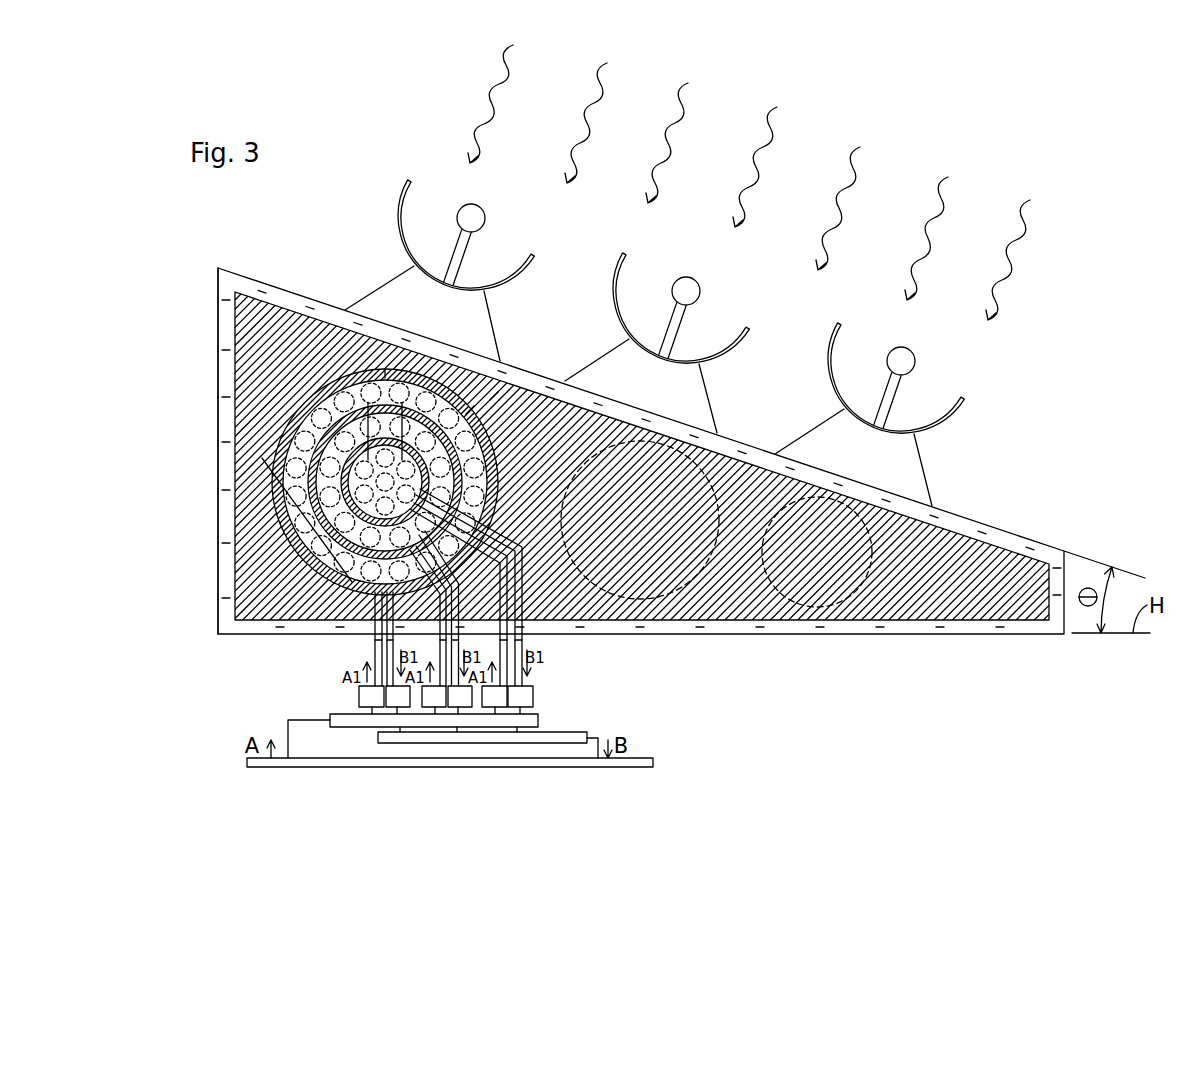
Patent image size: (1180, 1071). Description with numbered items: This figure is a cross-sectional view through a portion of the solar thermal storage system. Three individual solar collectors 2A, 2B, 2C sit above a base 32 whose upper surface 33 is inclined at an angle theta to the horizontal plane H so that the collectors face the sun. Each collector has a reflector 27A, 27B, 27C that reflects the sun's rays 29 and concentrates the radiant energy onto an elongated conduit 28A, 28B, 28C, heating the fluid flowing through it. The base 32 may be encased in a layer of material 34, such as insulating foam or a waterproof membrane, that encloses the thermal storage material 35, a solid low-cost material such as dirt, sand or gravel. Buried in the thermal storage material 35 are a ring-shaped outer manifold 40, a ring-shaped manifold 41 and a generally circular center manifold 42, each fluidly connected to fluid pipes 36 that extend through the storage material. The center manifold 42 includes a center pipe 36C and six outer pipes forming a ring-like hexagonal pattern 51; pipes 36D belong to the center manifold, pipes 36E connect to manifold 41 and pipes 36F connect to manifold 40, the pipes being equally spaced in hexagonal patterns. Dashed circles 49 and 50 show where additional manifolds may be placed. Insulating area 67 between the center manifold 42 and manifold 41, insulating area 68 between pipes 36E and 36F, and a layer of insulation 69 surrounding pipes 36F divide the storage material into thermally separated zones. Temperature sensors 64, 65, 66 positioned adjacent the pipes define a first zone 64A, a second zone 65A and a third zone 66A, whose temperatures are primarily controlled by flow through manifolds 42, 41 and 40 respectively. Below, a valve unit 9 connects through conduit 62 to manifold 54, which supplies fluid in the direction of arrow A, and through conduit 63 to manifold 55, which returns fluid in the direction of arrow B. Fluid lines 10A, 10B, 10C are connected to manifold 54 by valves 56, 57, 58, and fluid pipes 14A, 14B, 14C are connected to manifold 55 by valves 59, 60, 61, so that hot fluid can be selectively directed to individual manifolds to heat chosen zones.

The solar collector 2A is at (432, 254).
The solar collector 2B is at (668, 324).
The solar collector 2C is at (880, 399).
The reflector 27A is at (402, 218).
The reflector 27B is at (620, 290).
The reflector 27C is at (833, 362).
The elongated conduit 28A is at (482, 205).
The elongated conduit 28B is at (697, 280).
The elongated conduit 28C is at (912, 350).
The sun's rays 29 is at (480, 95).
The base 32 is at (969, 504).
The upper surface 33 is at (988, 523).
The layer of material 34 is at (1038, 548).
The thermal storage material 35 is at (302, 365).
The fluid pipes 36 is at (282, 573).
The center pipe 36C is at (268, 512).
The pipes 36D is at (350, 480).
The pipes 36E is at (277, 613).
The pipes 36F is at (278, 590).
The outer manifold 40 is at (283, 493).
The manifold 41 is at (340, 465).
The center manifold 42 is at (392, 432).
The dashed circle 49 is at (660, 598).
The dashed circle 50 is at (863, 605).
The ring-like hexagonal pattern 51 is at (295, 540).
The manifold 54 is at (538, 714).
The manifold 55 is at (378, 738).
The valve 56 is at (371, 700).
The valve 57 is at (434, 700).
The valve 58 is at (494, 700).
The valve 59 is at (398, 700).
The valve 60 is at (460, 700).
The valve 61 is at (520, 700).
The conduit 62 is at (288, 720).
The conduit 63 is at (598, 738).
The valve unit 9 is at (635, 757).
The temperature sensor 64 is at (370, 397).
The first zone 64A is at (362, 440).
The temperature sensor 65 is at (450, 443).
The second zone 65A is at (477, 447).
The temperature sensor 66 is at (423, 393).
The third zone 66A is at (443, 437).
The insulating area 67 is at (492, 410).
The insulating area 68 is at (512, 440).
The layer of insulation 69 is at (500, 370).
The fluid line 10A is at (437, 637).
The fluid line 10B is at (373, 643).
The fluid line 10C is at (503, 645).
The fluid pipe 14A is at (397, 642).
The fluid pipe 14B is at (453, 640).
The fluid pipe 14C is at (518, 652).